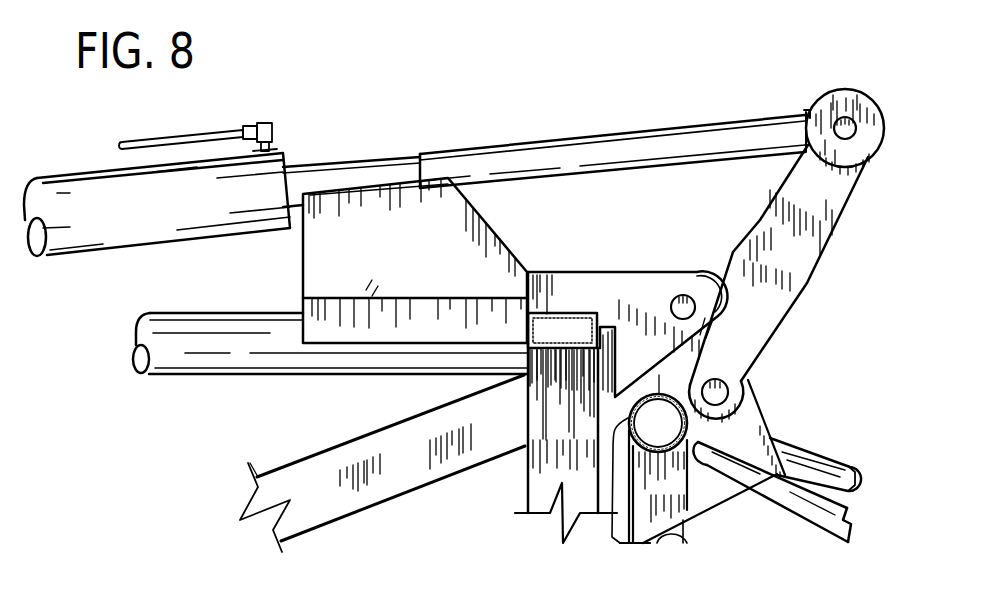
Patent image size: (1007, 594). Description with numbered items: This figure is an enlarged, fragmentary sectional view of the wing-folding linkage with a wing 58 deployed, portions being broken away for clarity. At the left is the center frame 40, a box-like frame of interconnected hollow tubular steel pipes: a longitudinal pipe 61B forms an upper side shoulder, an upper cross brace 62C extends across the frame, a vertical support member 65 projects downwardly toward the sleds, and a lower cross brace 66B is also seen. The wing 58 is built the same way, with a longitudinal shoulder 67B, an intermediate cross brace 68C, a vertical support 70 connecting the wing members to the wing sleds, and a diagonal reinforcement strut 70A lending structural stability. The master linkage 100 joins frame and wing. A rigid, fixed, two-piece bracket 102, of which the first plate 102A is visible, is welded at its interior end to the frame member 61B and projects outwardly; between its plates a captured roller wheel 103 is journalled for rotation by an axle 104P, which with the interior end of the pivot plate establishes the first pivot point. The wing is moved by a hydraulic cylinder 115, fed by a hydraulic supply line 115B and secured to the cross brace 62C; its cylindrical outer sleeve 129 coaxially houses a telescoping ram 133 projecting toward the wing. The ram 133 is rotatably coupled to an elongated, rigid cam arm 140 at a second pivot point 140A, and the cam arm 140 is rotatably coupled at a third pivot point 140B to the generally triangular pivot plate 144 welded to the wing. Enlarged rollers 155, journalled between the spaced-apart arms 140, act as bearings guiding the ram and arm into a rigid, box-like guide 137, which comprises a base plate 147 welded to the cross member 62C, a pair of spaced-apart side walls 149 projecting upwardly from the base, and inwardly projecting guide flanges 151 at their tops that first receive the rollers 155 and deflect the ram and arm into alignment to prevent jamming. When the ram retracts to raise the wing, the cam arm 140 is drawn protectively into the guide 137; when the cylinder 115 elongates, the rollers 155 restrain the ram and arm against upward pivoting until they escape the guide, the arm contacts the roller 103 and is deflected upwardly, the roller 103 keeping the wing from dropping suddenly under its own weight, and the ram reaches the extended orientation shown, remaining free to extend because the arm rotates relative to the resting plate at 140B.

The center frame 40 is at (220, 446).
The wing 58 is at (781, 431).
The longitudinal pipe 61B is at (533, 330).
The upper cross brace 62C is at (248, 358).
The vertical support member 65 is at (537, 487).
The inclined beam 66B is at (393, 492).
The longitudinal shoulder 67B is at (566, 513).
The intermediate cross brace 68C is at (847, 463).
The vertical support 70 is at (697, 526).
The reinforcement strut 70A is at (770, 490).
The arm assembly 100 is at (746, 185).
The bracket 102 is at (621, 293).
The first plate 102A is at (568, 293).
The roller wheel 103 is at (697, 273).
The axle 104P is at (695, 311).
The hydraulic cylinder 115 is at (100, 171).
The hydraulic supply line 115B is at (192, 132).
The cylindrical outer sleeve 129 is at (152, 234).
The telescoping ram 133 is at (605, 138).
The box-like guide 137 is at (336, 268).
The cam arm 140 is at (772, 320).
The second pivot point 140A is at (858, 122).
The third pivot point 140B is at (728, 387).
The bracket plate 144 is at (750, 413).
The base plate 147 is at (415, 320).
The side walls 149 is at (415, 238).
The guide flanges 151 is at (420, 160).
The rollers 155 is at (837, 103).